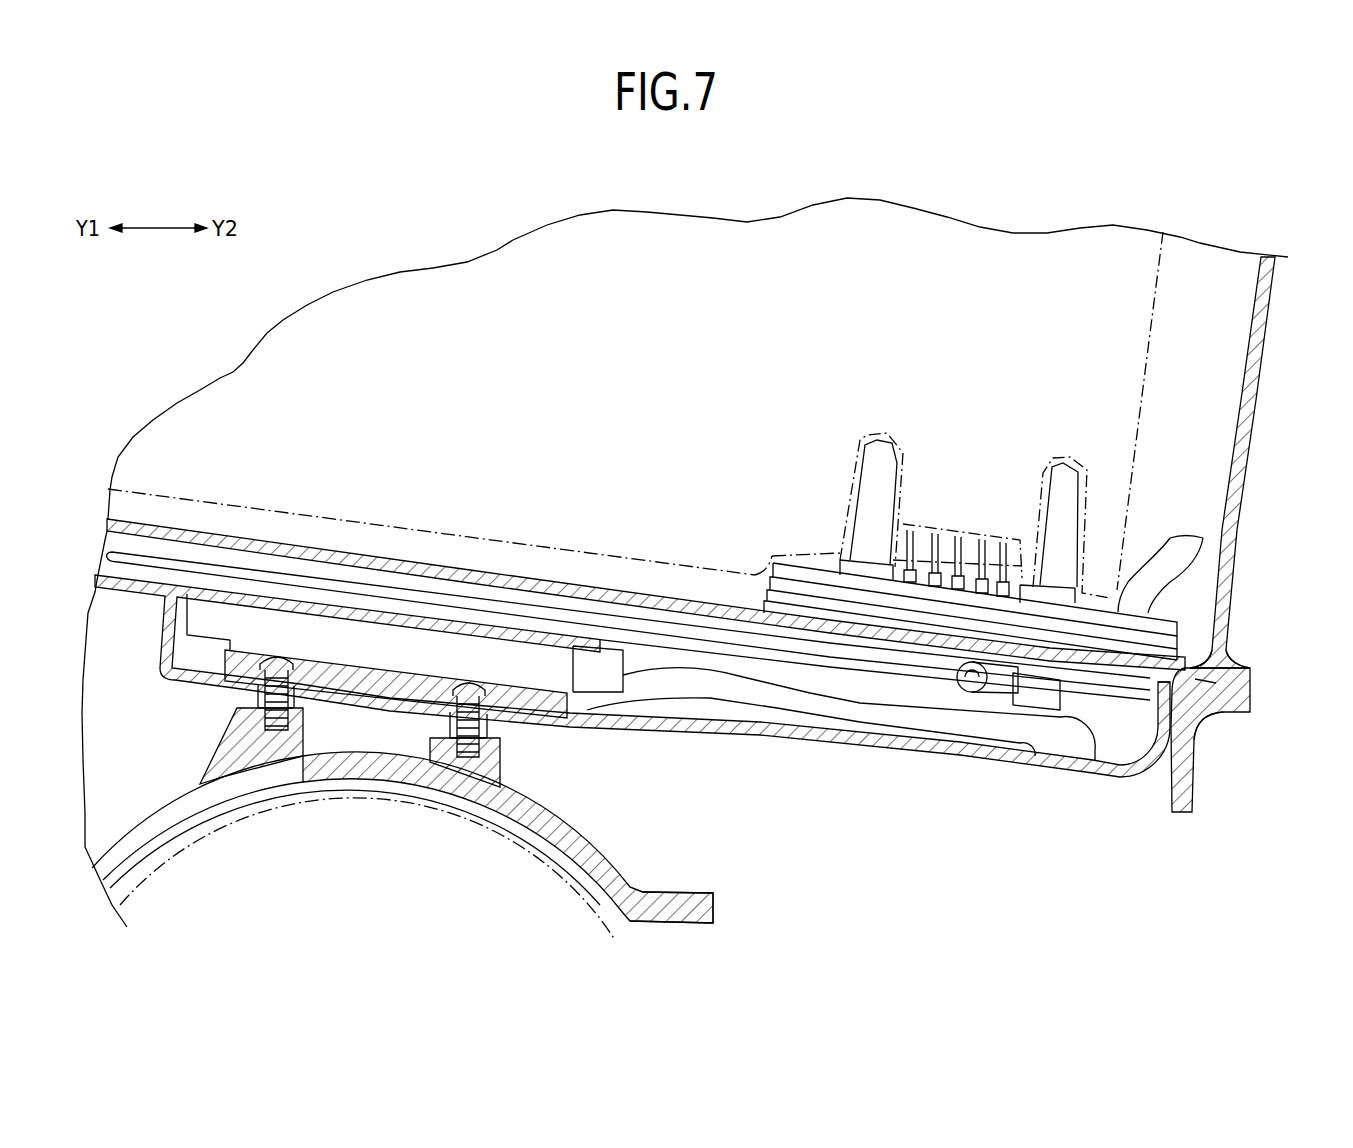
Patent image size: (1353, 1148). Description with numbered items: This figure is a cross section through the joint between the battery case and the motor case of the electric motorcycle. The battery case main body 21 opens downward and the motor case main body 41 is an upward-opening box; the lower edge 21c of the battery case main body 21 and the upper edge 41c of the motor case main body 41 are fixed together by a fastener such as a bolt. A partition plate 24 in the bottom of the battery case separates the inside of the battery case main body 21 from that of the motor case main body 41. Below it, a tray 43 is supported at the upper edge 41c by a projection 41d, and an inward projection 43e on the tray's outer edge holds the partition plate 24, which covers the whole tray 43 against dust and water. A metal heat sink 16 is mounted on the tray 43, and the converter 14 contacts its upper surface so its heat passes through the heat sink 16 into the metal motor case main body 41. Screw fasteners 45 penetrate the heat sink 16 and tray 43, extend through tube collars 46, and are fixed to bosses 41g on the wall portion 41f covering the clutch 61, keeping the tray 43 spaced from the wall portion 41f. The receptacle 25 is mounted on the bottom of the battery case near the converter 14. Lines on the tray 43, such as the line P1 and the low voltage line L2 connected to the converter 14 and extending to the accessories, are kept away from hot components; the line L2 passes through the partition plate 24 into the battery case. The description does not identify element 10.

The glass panel 10 is at (1142, 393).
The battery case main body 21 is at (1250, 438).
The lower edge 21c is at (1232, 660).
The motor case main body 41 is at (1193, 805).
The upper edge 41c is at (1224, 713).
The projection 41d is at (1200, 682).
The wall portion 41f is at (543, 815).
The boss 41g is at (240, 748).
The tray 43 is at (863, 745).
The projection 43e is at (1150, 765).
The fastener 45 is at (278, 658).
The tube collar 46 is at (257, 697).
The partition plate 24 is at (327, 552).
The converter 14 is at (390, 626).
The heat sink 16 is at (385, 700).
The receptacle 25 is at (960, 614).
The clutch 61 is at (607, 857).
The line P1 is at (500, 611).
The low voltage line L2 is at (777, 698).